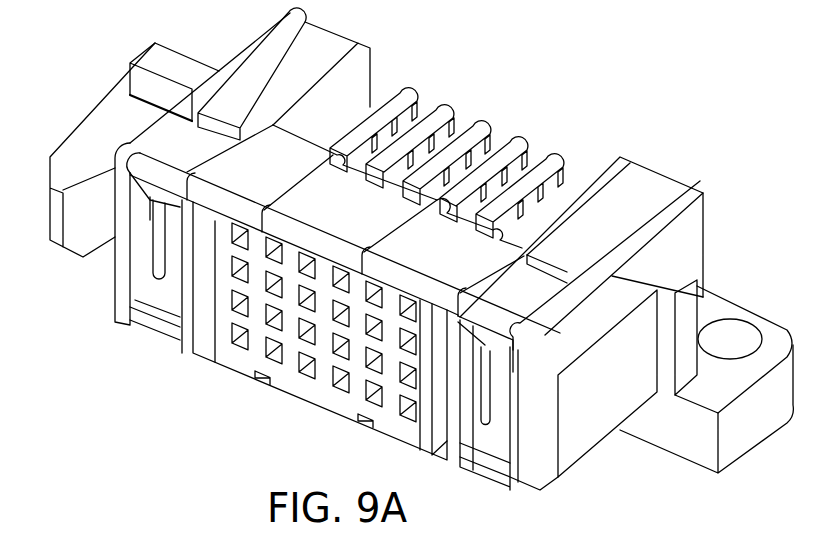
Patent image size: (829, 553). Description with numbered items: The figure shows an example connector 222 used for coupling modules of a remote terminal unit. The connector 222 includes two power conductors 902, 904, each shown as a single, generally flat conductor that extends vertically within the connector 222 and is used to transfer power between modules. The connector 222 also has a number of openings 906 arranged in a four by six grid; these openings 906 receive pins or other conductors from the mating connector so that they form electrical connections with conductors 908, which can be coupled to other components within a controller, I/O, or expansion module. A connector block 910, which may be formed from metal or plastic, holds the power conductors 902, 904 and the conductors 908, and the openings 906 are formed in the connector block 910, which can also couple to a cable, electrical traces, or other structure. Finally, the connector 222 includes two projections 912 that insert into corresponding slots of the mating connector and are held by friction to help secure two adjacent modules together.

The connector 222 is at (583, 70).
The power conductor 902 is at (150, 243).
The power conductor 904 is at (502, 407).
The openings 906 is at (303, 385).
The conductors 908 is at (470, 123).
The connector block 910 is at (652, 185).
The projections 912 is at (90, 135).